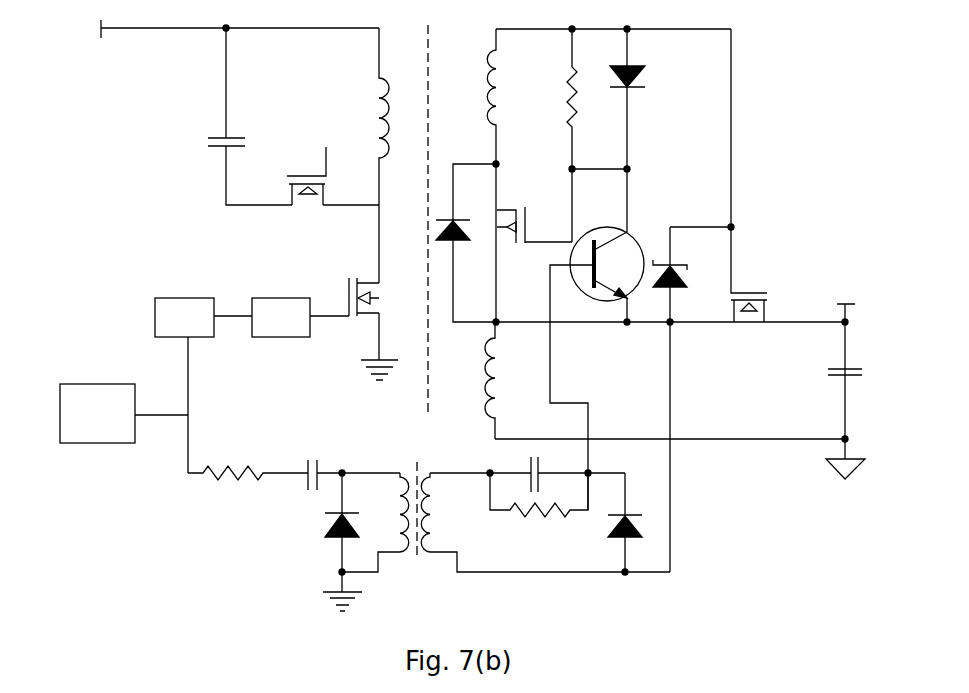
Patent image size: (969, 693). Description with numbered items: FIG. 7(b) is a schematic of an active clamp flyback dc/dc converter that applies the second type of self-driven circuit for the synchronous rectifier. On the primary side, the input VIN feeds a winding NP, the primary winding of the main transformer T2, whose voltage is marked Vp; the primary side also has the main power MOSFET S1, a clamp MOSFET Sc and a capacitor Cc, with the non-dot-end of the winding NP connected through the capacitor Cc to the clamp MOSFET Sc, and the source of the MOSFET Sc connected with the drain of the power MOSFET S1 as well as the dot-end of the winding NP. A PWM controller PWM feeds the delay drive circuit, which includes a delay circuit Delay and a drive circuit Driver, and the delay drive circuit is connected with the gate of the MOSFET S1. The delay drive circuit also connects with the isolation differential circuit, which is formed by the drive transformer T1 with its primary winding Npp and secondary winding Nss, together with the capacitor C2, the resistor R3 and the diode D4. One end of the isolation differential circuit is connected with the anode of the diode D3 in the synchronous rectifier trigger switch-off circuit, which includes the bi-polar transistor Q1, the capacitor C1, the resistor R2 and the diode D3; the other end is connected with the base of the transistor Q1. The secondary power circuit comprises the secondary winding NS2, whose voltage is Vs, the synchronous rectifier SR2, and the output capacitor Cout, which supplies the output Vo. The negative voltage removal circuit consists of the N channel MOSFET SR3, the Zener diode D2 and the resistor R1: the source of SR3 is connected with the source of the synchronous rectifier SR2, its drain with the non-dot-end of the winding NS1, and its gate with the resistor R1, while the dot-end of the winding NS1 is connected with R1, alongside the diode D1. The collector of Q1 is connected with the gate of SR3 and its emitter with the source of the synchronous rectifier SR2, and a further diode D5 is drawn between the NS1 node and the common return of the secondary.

The input voltage terminal VIN is at (224, 29).
The capacitor Cc is at (250, 116).
The MOSFET Sc is at (331, 186).
The primary winding NP is at (397, 155).
The primary winding voltage Vp is at (357, 126).
The main transformer T2 is at (441, 220).
The main power MOSFET S1 is at (354, 329).
The delay circuit Delay is at (203, 385).
The drive circuit Driver is at (281, 317).
The PWM controller PWM is at (124, 413).
The resistor R3 is at (248, 456).
The capacitor C2 is at (351, 461).
The diode D4 is at (324, 542).
The drive transformer T1 is at (412, 498).
The primary winding Npp is at (375, 522).
The secondary winding Nss is at (545, 521).
The capacitor C1 is at (559, 470).
The resistor R2 is at (539, 508).
The diode D3 is at (609, 524).
The winding NS1 is at (609, 175).
The resistor R1 is at (580, 134).
The diode D1 is at (643, 175).
The diode D5 is at (640, 244).
The N channel MOSFET SR3 is at (534, 215).
The bi-polar transistor Q1 is at (597, 368).
The Zener Diode D2 is at (693, 398).
The rectifier SR2 is at (750, 192).
The output voltage terminal Vo is at (846, 307).
The output capacitor Cout is at (680, 400).
The secondary winding NS2 is at (468, 380).
The secondary winding voltage Vs is at (507, 385).